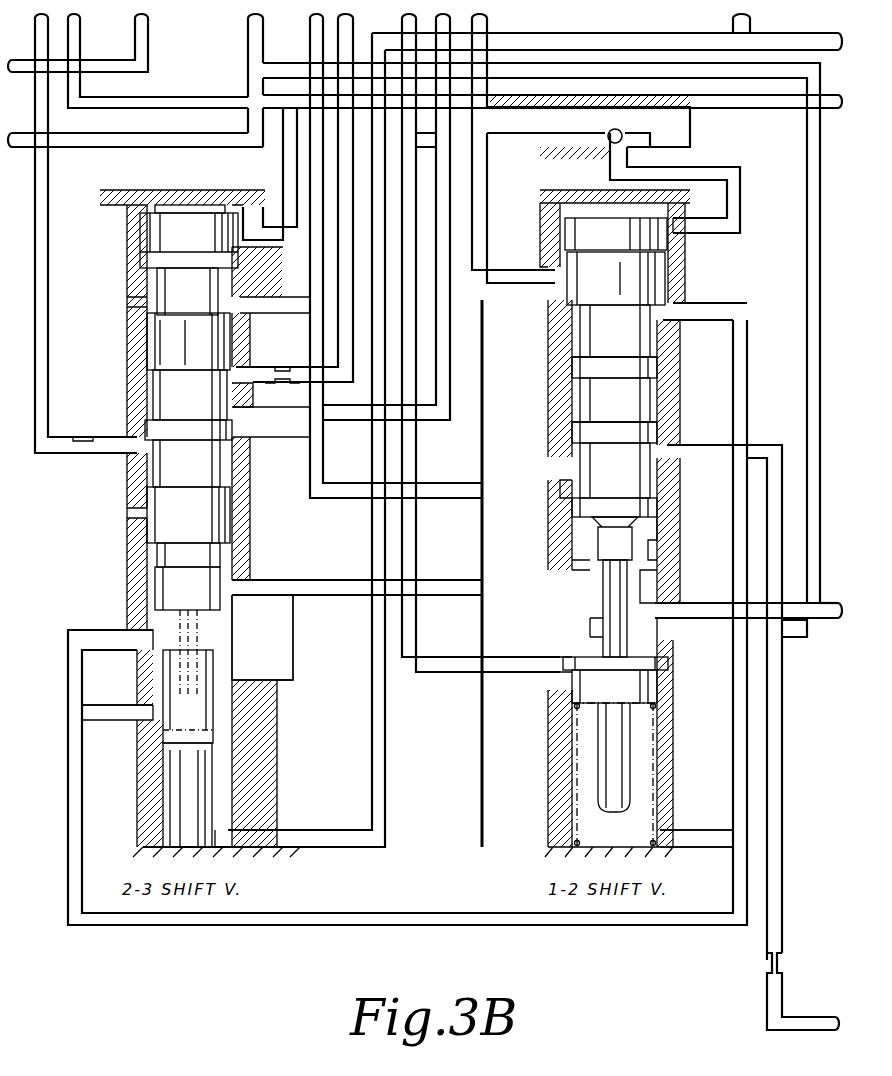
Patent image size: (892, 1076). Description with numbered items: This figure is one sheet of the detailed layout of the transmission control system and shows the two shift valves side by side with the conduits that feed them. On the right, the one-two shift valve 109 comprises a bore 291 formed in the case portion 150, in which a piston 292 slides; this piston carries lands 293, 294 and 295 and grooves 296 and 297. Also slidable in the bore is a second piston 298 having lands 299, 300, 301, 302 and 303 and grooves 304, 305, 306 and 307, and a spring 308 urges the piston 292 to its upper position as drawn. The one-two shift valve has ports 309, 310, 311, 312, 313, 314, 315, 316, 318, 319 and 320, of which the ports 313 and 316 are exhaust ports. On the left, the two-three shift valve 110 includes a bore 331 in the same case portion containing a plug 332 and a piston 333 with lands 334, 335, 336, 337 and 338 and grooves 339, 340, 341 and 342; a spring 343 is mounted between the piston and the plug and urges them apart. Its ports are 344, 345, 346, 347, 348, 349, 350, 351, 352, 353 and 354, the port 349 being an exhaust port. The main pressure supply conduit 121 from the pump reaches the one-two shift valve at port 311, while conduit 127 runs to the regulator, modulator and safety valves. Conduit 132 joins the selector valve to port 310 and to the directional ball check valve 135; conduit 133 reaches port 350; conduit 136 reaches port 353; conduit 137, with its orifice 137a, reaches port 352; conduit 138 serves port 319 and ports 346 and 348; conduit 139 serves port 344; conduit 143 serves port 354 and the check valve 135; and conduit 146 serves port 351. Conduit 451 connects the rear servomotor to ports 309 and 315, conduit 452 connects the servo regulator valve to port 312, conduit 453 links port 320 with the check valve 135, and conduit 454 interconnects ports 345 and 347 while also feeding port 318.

The 1-2 shift valve 109 is at (545, 796).
The 2-3 shift valve 110 is at (262, 782).
The conduit 121 is at (250, 80).
The conduit 127 is at (149, 35).
The conduit 132 is at (438, 662).
The conduit 133 is at (33, 456).
The directional ball check valve 135 is at (605, 133).
The conduit 136 is at (445, 500).
The conduit 137 is at (333, 384).
The orifice 137a is at (290, 367).
The conduit 138 is at (352, 590).
The conduit 139 is at (690, 38).
The conduit 143 is at (777, 116).
The conduit 146 is at (432, 420).
The case portion 150 is at (130, 303).
The bore 291 is at (655, 537).
The piston 292 is at (562, 726).
The land 293 is at (655, 700).
The land 294 is at (590, 633).
The land 295 is at (598, 543).
The groove 296 is at (665, 672).
The groove 297 is at (603, 597).
The piston 298 is at (583, 210).
The land 299 is at (568, 508).
The land 300 is at (660, 427).
The land 301 is at (572, 352).
The land 302 is at (690, 310).
The land 303 is at (565, 222).
The groove 304 is at (568, 450).
The groove 305 is at (660, 398).
The groove 306 is at (565, 335).
The groove 307 is at (567, 250).
The spring 308 is at (660, 762).
The port 309 is at (672, 832).
The port 310 is at (562, 680).
The port 311 is at (655, 625).
The port 312 is at (660, 582).
The port 313 is at (568, 560).
The port 314 is at (570, 482).
The port 315 is at (668, 455).
The port 316 is at (586, 400).
The port 318 is at (668, 315).
The port 319 is at (552, 285).
The port 320 is at (673, 230).
The bore 331 is at (150, 337).
The plug 332 is at (180, 790).
The piston 333 is at (158, 197).
The land 334 is at (152, 585).
The land 335 is at (162, 530).
The land 336 is at (152, 425).
The land 337 is at (160, 355).
The land 338 is at (140, 260).
The groove 339 is at (212, 560).
The groove 340 is at (225, 470).
The groove 341 is at (155, 390).
The groove 342 is at (148, 280).
The spring 343 is at (212, 733).
The port 344 is at (230, 840).
The port 345 is at (147, 718).
The port 346 is at (235, 683).
The port 347 is at (145, 645).
The port 348 is at (245, 578).
The port 349 is at (130, 508).
The port 350 is at (130, 450).
The port 351 is at (245, 420).
The port 352 is at (255, 400).
The port 353 is at (255, 297).
The port 354 is at (258, 205).
The conduit 451 is at (776, 920).
The conduit 452 is at (828, 618).
The conduit 453 is at (742, 198).
The conduit 454 is at (437, 915).